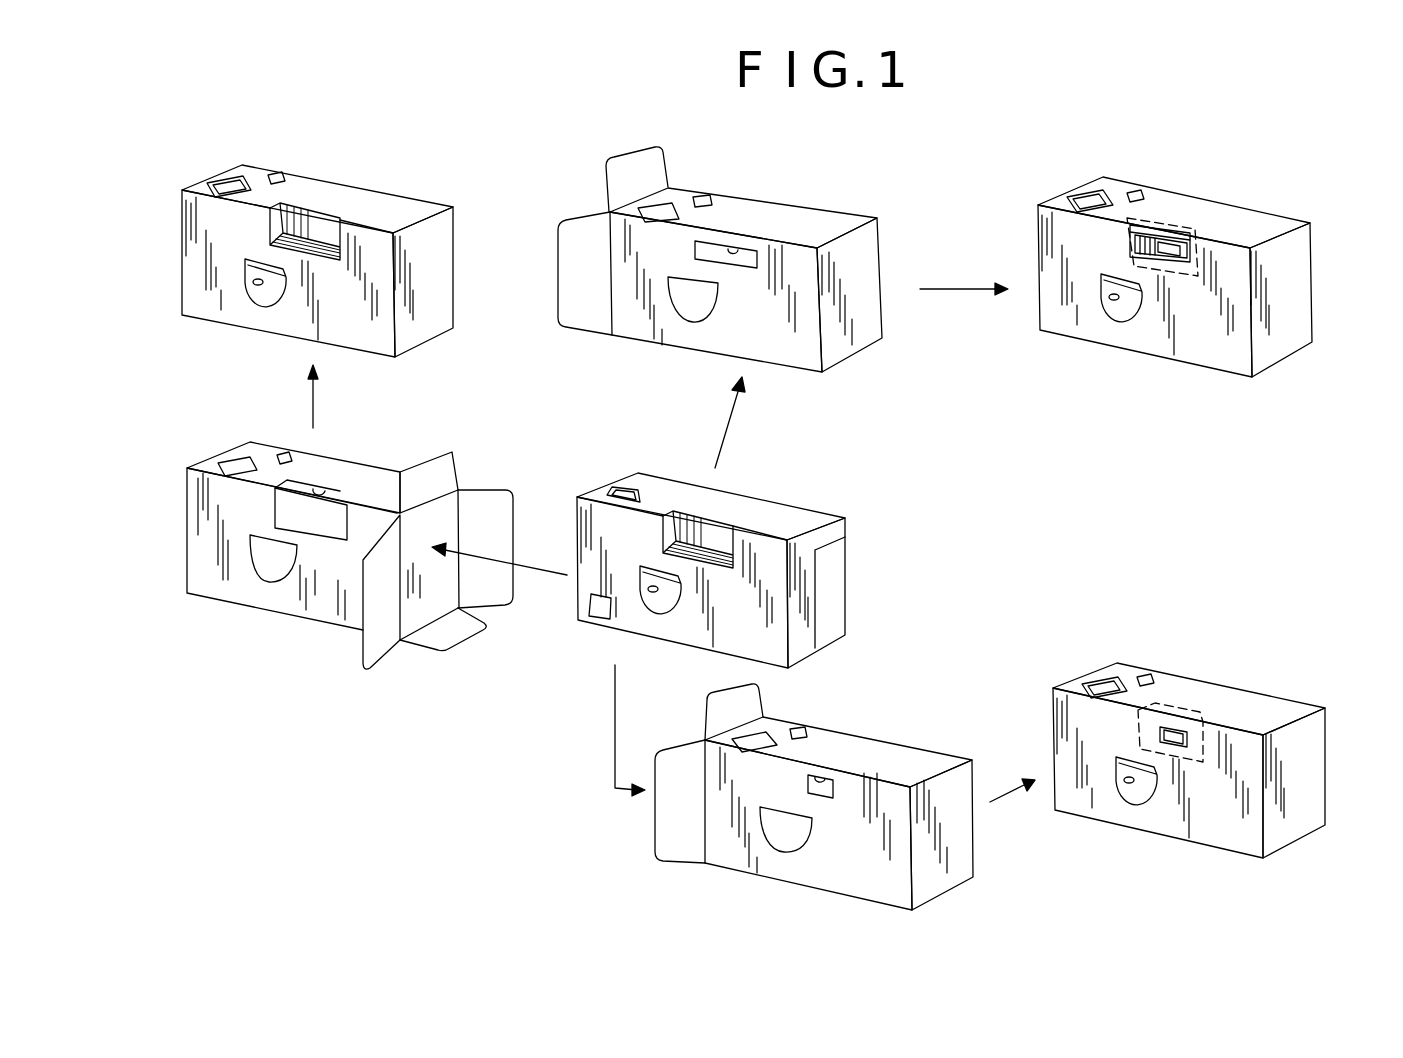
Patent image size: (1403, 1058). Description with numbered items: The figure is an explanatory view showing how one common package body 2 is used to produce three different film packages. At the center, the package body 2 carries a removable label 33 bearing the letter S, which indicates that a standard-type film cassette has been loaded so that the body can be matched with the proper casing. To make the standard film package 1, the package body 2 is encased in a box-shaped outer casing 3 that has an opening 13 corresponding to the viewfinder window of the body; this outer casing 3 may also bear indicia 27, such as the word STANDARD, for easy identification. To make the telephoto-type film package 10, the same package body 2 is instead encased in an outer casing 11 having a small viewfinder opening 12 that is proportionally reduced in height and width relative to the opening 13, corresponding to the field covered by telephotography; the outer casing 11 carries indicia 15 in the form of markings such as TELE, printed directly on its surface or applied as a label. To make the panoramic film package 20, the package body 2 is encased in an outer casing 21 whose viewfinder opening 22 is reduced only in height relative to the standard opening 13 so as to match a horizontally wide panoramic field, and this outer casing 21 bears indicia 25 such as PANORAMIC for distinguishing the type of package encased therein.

The standard film package 1 is at (461, 232).
The package body 2 is at (847, 567).
The outer casing 3 is at (185, 548).
The telephoto-type film package 10 is at (1336, 738).
The outer casing 11 is at (713, 830).
The viewfinder opening 12 is at (827, 778).
The opening 13 is at (318, 495).
The indicia 15 is at (897, 888).
The panoramic film package 20 is at (1318, 232).
The outer casing 21 is at (823, 218).
The viewfinder opening 22 is at (742, 247).
The indicia 25 is at (775, 363).
The indicia 27 is at (287, 318).
The label 33 is at (583, 607).